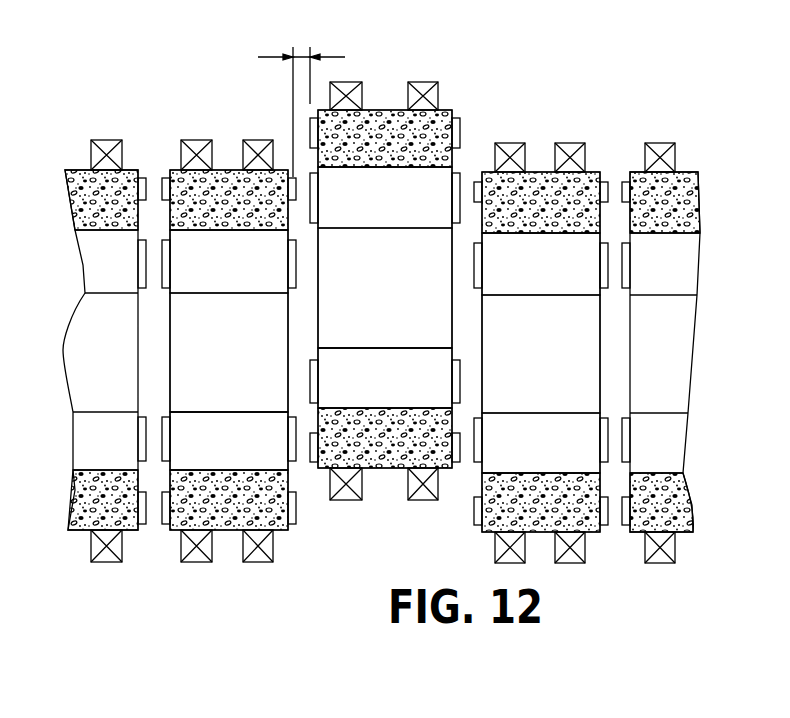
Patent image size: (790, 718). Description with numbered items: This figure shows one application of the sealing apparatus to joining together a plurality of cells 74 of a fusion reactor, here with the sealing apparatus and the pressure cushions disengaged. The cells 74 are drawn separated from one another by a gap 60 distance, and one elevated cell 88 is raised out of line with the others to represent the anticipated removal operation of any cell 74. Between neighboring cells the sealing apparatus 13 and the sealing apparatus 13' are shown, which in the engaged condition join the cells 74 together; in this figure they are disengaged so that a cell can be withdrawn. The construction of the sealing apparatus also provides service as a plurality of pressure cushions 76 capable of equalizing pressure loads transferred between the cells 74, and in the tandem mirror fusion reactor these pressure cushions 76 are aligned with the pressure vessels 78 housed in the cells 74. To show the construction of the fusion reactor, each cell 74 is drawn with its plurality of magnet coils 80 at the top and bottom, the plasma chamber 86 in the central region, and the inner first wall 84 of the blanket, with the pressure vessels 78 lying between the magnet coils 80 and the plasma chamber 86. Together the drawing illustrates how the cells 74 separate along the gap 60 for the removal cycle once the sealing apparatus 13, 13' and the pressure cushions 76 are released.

The gap 60 is at (296, 57).
The cell 74 is at (230, 114).
The pressure cushion 76 is at (161, 416).
The pressure vessel 78 is at (244, 273).
The magnet coil 80 is at (213, 553).
The inner first wall 84 is at (253, 412).
The plasma chamber 86 is at (246, 339).
The elevated cell 88 is at (442, 110).
The sealing apparatus 13 is at (136, 540).
The sealing apparatus 13' is at (181, 543).